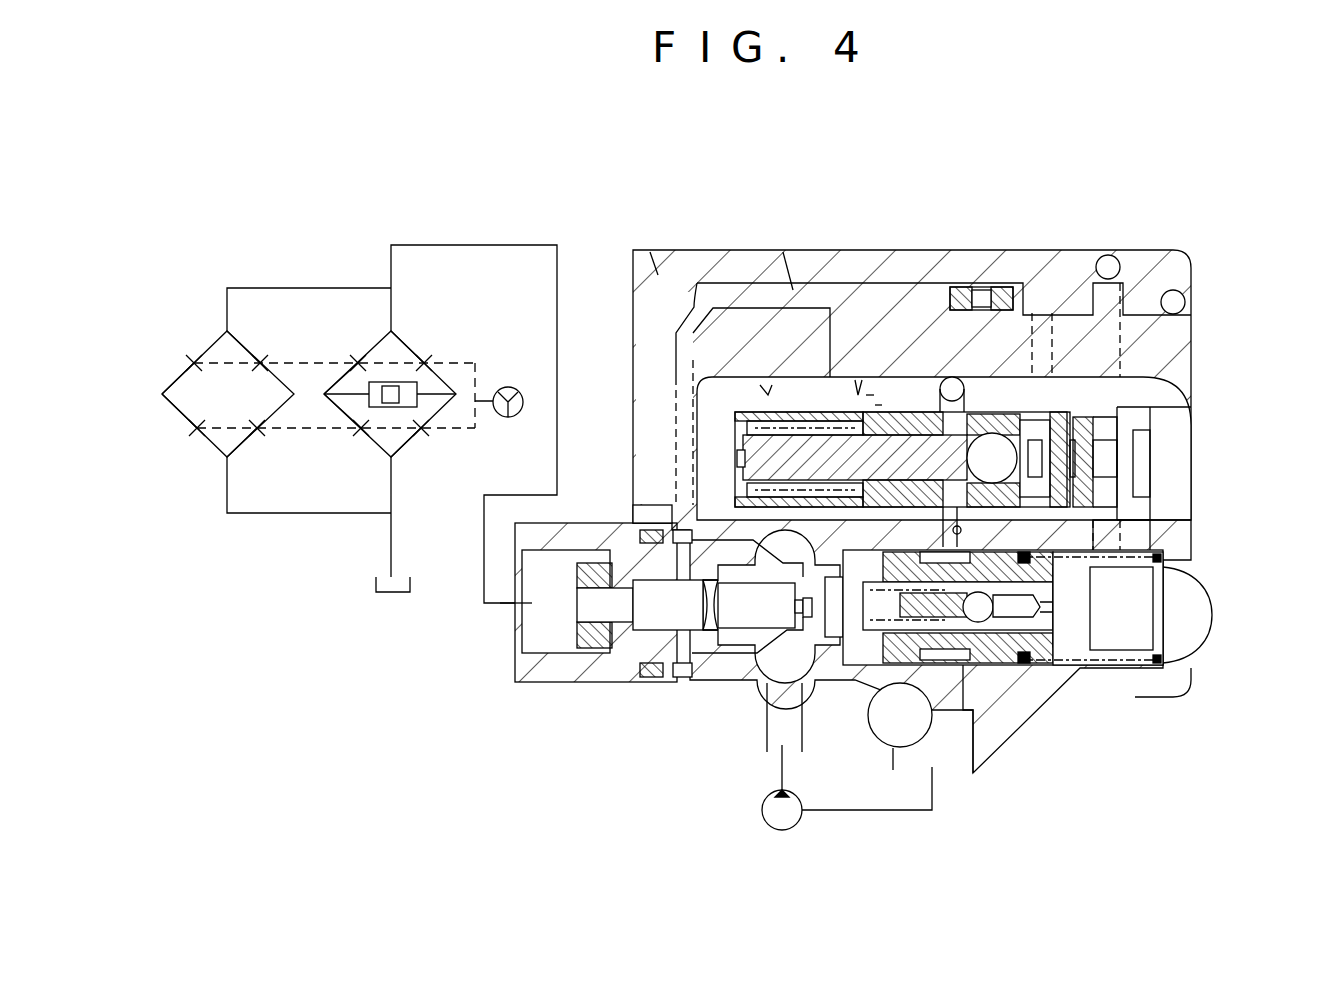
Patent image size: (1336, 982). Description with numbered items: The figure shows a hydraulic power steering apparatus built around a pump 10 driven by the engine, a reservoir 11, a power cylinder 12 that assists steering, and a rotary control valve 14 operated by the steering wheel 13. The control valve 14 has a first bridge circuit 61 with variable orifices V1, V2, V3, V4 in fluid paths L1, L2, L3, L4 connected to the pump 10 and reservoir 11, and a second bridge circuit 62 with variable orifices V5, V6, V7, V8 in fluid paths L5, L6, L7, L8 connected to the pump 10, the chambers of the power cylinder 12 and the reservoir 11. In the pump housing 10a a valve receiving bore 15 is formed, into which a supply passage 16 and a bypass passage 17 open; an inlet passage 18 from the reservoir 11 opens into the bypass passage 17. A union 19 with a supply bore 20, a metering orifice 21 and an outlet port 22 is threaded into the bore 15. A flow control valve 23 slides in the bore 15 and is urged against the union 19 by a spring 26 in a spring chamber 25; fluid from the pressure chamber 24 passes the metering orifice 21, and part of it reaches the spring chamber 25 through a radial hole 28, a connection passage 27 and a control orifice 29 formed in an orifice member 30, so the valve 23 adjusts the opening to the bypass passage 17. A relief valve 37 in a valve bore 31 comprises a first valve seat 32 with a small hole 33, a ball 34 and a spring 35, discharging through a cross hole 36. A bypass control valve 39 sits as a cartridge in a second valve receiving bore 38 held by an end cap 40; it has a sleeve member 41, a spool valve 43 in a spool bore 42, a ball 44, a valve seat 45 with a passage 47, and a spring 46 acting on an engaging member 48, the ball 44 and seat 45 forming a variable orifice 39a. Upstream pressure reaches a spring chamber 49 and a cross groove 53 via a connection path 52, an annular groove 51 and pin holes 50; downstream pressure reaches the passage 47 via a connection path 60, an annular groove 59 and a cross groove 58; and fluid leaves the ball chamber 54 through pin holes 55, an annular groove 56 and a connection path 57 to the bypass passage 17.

The pump 10 is at (788, 835).
The pump housing 10a is at (658, 275).
The reservoir 11 is at (387, 596).
The power cylinder 12 is at (395, 410).
The steering wheel 13 is at (522, 394).
The rotary control valve 14 is at (248, 270).
The valve receiving bore 15 is at (1147, 585).
The supply passage 16 is at (768, 738).
The bypass passage 17 is at (970, 770).
The inlet passage 18 is at (930, 740).
The union 19 is at (575, 687).
The supply bore 20 is at (640, 630).
The metering orifice 21 is at (713, 620).
The outlet port 22 is at (538, 650).
The flow control valve 23 is at (1010, 725).
The pressure chamber 24 is at (783, 563).
The spring chamber 25 is at (1182, 603).
The spring 26 is at (1167, 660).
The connection passage 27 is at (714, 270).
The radial hole 28 is at (657, 553).
The control orifice 29 is at (957, 287).
The orifice member 30 is at (983, 287).
The valve bore 31 is at (862, 660).
The first valve seat 32 is at (1137, 667).
The small hole 33 is at (1050, 660).
The ball 34 is at (980, 620).
The spring 35 is at (862, 650).
The cross hole 36 is at (975, 765).
The relief valve 37 is at (1070, 548).
The second valve receiving bore 38 is at (885, 300).
The bypass control valve 39 is at (897, 410).
The variable orifice 39a is at (1173, 257).
The end cap 40 is at (1150, 430).
The sleeve member 41 is at (735, 415).
The spool bore 42 is at (1010, 330).
The spool valve 43 is at (805, 335).
The ball 44 is at (1040, 315).
The valve seat 45 is at (1190, 345).
The spring 46 is at (762, 388).
The passage 47 is at (1185, 395).
The engaging member 48 is at (747, 488).
The spring chamber 49 is at (740, 428).
The pin holes 50 is at (878, 405).
The annular groove 51 is at (868, 395).
The connection path 52 is at (858, 388).
The cross groove 53 is at (735, 460).
The ball chamber 54 is at (1128, 385).
The pin holes 55 is at (1120, 470).
The annular groove 56 is at (1100, 488).
The connection path 57 is at (970, 522).
The cross groove 58 is at (1143, 430).
The annular groove 59 is at (1070, 500).
The connection path 60 is at (1067, 390).
The first bridge circuit 61 is at (191, 320).
The second bridge circuit 62 is at (449, 375).
The fluid path L1 is at (169, 382).
The fluid path L2 is at (238, 342).
The fluid path L3 is at (169, 411).
The fluid path L4 is at (246, 446).
The fluid path L5 is at (376, 344).
The fluid path L6 is at (410, 372).
The fluid path L7 is at (378, 454).
The fluid path L8 is at (413, 446).
The variable orifice V1 is at (179, 346).
The variable orifice V2 is at (277, 347).
The variable orifice V3 is at (183, 446).
The variable orifice V4 is at (270, 448).
The variable orifice V5 is at (346, 346).
The variable orifice V6 is at (437, 349).
The variable orifice V7 is at (343, 448).
The variable orifice V8 is at (449, 444).